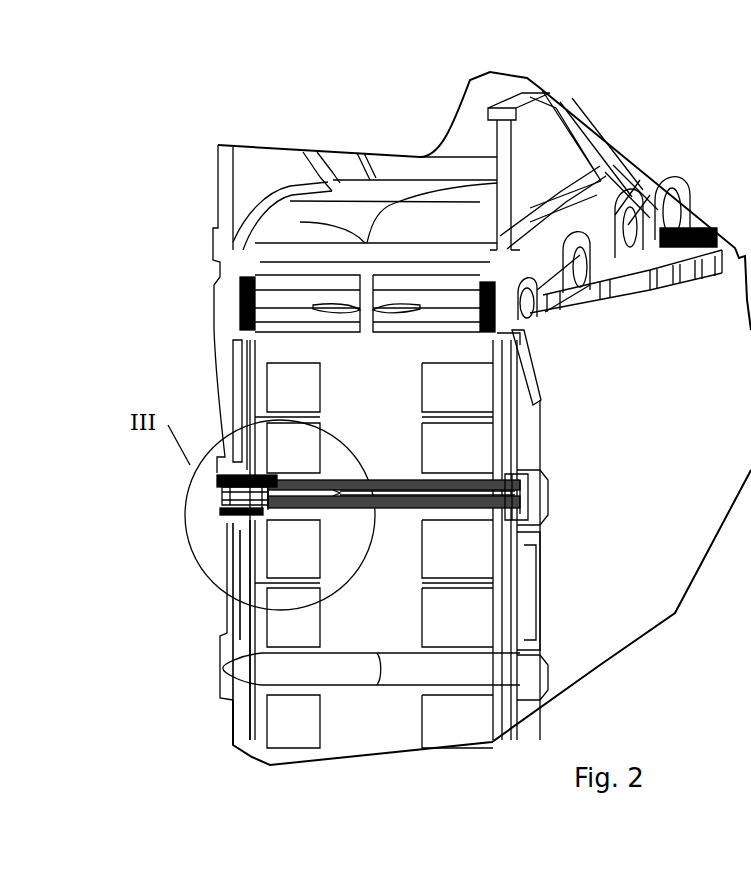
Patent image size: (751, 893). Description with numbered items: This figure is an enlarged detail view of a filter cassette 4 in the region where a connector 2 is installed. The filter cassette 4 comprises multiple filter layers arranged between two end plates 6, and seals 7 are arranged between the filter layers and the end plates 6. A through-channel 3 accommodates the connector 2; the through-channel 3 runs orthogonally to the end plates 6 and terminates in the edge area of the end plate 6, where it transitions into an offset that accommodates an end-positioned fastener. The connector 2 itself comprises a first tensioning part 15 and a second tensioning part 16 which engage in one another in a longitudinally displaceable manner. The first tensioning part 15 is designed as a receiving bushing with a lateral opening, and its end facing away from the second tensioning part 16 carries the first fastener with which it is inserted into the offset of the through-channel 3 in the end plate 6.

The connector 2 is at (218, 498).
The through-channel 3 is at (303, 507).
The filter cassette 4 is at (385, 130).
The end plate 6 is at (225, 165).
The seal 7 is at (247, 397).
The first tensioning part 15 is at (242, 498).
The second tensioning part 16 is at (325, 503).